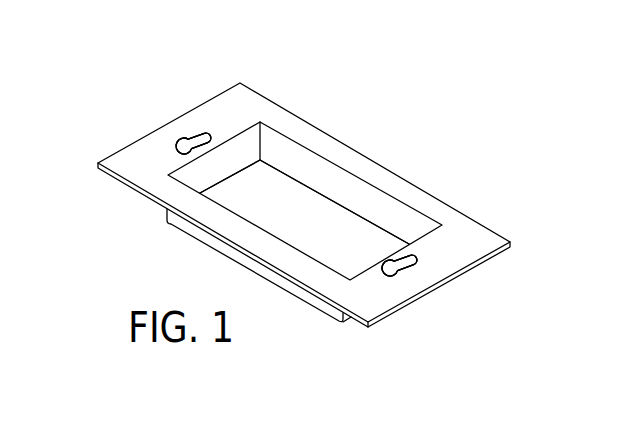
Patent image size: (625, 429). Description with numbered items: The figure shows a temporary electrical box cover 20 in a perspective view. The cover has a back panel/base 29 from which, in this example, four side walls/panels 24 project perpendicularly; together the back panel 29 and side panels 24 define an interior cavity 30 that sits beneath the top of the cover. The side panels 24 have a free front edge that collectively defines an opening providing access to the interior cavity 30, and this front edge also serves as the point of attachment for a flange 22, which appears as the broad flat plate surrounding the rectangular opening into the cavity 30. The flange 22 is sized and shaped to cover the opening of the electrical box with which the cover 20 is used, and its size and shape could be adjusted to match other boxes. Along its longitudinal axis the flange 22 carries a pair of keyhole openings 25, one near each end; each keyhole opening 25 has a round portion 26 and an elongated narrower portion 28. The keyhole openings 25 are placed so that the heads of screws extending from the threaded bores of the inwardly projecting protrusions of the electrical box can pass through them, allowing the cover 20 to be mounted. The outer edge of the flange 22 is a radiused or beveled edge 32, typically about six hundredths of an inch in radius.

The electrical box cover 20 is at (298, 182).
The flange 22 is at (133, 157).
The side walls/panels 24 is at (185, 226).
The keyhole openings 25 is at (188, 140).
The round portion 26 is at (183, 145).
The elongated narrower portion 28 is at (200, 136).
The back panel/base 29 is at (355, 255).
The interior cavity 30 is at (290, 210).
The radiused or beveled edge 32 is at (413, 217).